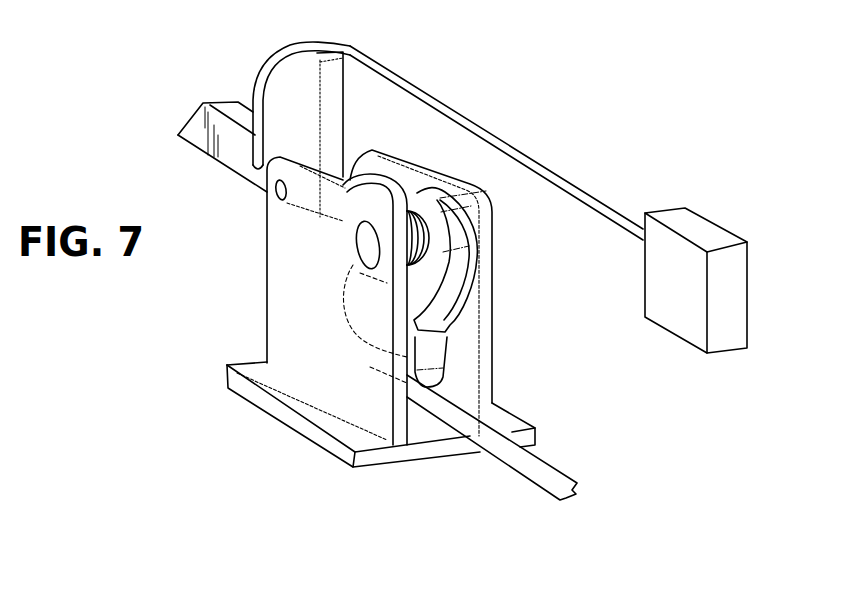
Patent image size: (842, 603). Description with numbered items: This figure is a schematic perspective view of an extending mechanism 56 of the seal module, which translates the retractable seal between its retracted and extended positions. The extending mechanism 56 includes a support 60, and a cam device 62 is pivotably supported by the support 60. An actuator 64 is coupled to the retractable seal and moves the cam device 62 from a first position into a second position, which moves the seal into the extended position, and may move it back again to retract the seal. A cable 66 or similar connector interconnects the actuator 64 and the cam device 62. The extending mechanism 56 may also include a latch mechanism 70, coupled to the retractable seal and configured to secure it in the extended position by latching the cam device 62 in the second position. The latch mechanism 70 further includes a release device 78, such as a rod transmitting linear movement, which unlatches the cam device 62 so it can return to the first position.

The extending mechanism 56 is at (490, 102).
The support 60 is at (273, 407).
The cam device 62 is at (230, 103).
The actuator 64 is at (700, 230).
The cable 66 is at (568, 183).
The latch mechanism 70 is at (334, 279).
The release device 78 is at (543, 475).